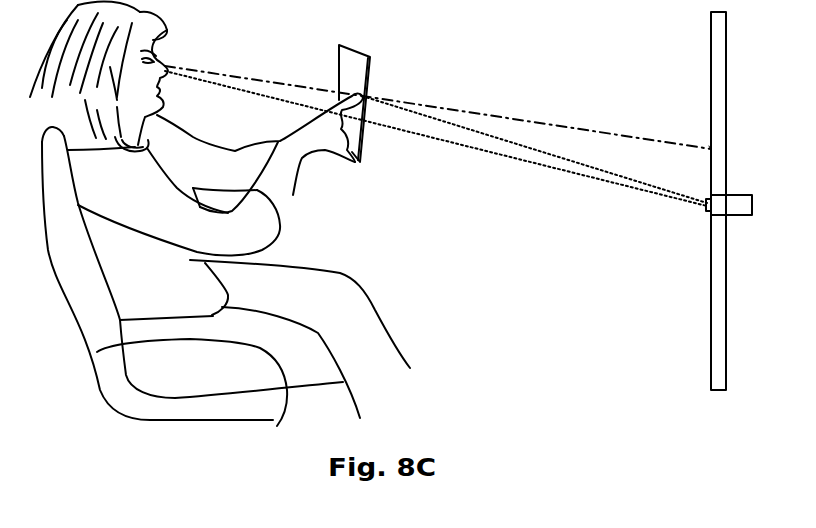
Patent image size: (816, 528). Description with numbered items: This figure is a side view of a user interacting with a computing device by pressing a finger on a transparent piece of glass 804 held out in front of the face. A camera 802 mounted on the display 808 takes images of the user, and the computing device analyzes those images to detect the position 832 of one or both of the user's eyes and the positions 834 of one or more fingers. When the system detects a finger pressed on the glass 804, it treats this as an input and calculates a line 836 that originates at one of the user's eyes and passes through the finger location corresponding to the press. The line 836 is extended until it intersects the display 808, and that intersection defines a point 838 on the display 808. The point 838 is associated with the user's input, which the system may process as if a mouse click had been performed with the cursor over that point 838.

The camera 802 is at (731, 205).
The piece of glass 804 is at (367, 60).
The display 808 is at (718, 333).
The position of eyes 832 is at (401, 132).
The positions of fingers 834 is at (483, 133).
The line 836 is at (490, 116).
The point 838 is at (706, 146).